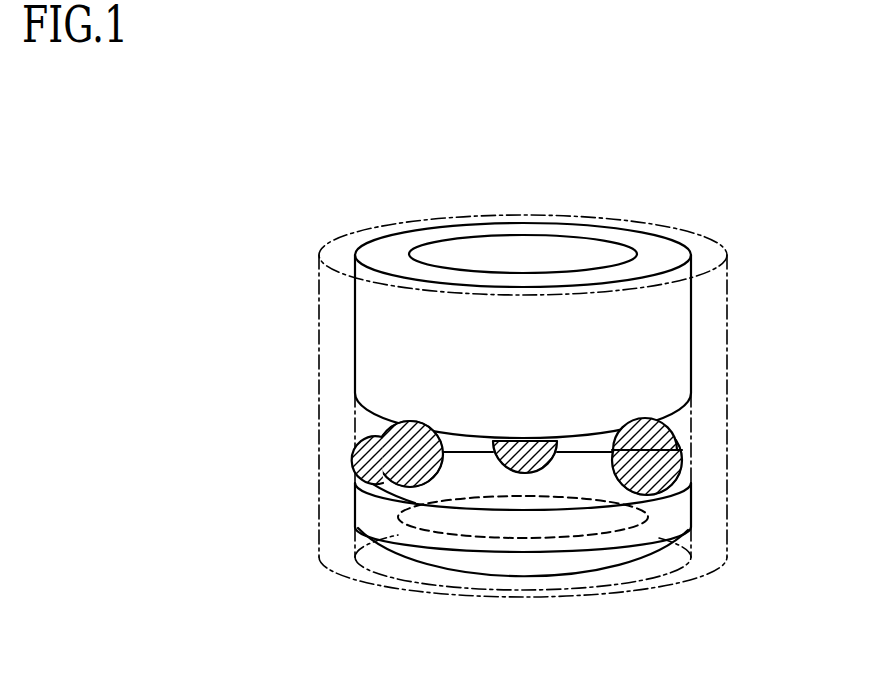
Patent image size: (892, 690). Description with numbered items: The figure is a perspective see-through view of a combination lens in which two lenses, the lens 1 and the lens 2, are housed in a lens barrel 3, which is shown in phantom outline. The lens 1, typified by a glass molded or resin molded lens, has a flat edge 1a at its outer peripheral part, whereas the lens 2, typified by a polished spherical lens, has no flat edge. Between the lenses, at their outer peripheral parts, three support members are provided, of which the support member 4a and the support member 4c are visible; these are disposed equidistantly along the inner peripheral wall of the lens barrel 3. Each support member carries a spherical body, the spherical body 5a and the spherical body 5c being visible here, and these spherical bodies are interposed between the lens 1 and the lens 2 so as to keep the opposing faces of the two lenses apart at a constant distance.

The lens 1 is at (522, 563).
The flat edge 1a is at (557, 486).
The lens 2 is at (660, 338).
The lens barrel 3 is at (337, 323).
The support member 4a is at (680, 462).
The support member 4c is at (363, 467).
The spherical body 5a is at (650, 420).
The spherical body 5c is at (388, 428).